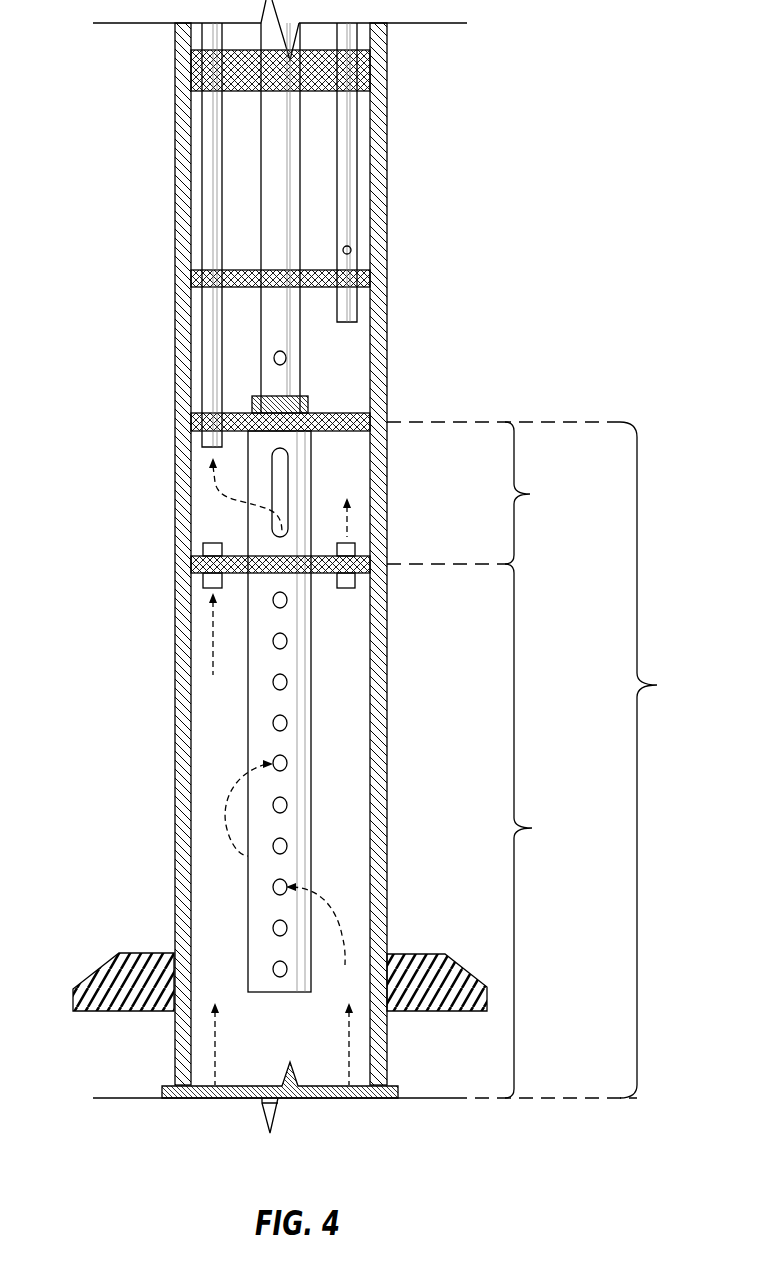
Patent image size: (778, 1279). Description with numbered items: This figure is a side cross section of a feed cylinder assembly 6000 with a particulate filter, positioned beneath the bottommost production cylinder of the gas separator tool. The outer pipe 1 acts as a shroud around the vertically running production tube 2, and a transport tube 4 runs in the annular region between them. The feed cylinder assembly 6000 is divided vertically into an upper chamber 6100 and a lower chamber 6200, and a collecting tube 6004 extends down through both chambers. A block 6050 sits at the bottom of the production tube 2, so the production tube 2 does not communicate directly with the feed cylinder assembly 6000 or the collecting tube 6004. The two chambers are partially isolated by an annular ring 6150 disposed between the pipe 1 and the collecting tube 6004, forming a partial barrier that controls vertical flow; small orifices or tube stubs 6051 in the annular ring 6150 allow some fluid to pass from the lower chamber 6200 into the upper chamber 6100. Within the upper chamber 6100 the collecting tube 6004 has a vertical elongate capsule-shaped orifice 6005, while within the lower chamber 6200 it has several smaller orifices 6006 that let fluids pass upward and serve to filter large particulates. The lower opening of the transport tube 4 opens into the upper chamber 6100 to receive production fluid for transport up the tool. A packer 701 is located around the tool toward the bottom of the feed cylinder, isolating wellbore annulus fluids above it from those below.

The pipe 1 is at (387, 188).
The production tube 2 is at (289, 232).
The transport tube 4 is at (205, 349).
The packer 701 is at (415, 953).
The feed cylinder assembly 6000 is at (671, 760).
The collecting tube 6004 is at (295, 700).
The orifice 6005 is at (281, 487).
The small orifices 6006 is at (283, 763).
The block 6050 is at (302, 400).
The tube stubs 6051 is at (355, 551).
The upper chamber 6100 is at (503, 493).
The annular ring 6150 is at (196, 566).
The lower chamber 6200 is at (552, 831).